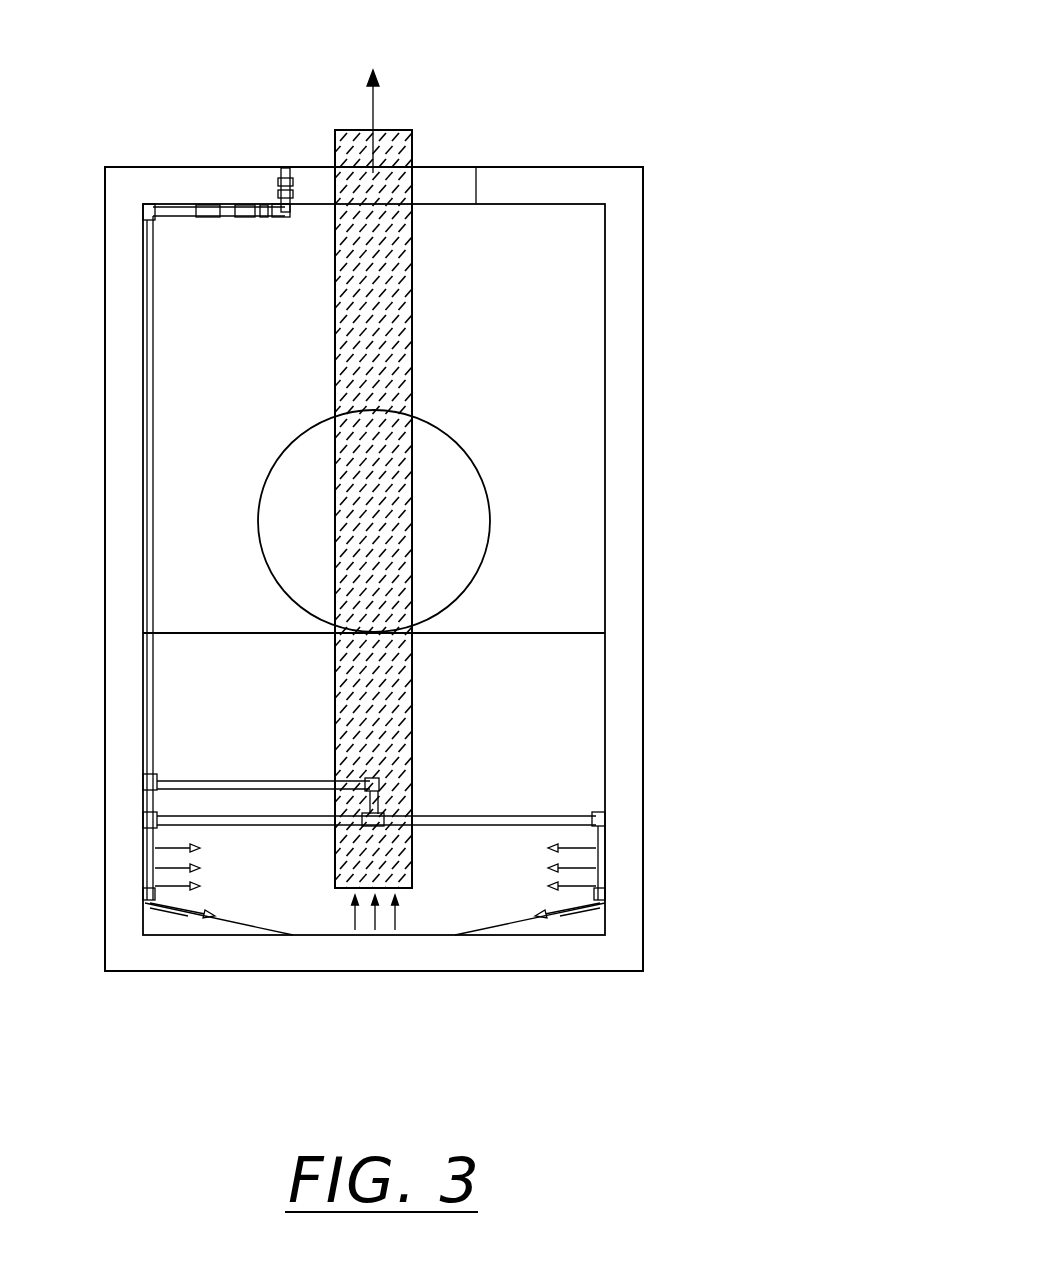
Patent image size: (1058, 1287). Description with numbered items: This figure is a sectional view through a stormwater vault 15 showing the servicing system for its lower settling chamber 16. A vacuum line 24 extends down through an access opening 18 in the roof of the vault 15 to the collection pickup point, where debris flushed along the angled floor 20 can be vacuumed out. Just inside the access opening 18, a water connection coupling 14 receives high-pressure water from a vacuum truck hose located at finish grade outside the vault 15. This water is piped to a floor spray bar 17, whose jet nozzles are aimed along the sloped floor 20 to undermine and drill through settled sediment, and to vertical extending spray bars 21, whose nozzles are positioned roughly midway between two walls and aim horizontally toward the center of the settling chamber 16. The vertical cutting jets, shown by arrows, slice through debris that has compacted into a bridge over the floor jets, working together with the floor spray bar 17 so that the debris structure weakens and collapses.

The water connection coupling 14 is at (288, 168).
The stormwater vault 15 is at (665, 138).
The settling chamber 16 is at (548, 592).
The floor spray bar 17 is at (585, 905).
The access opening 18 is at (449, 183).
The angled floor 20 is at (262, 925).
The vertical extending spray bar 21 is at (607, 843).
The vacuum line 24 is at (412, 362).